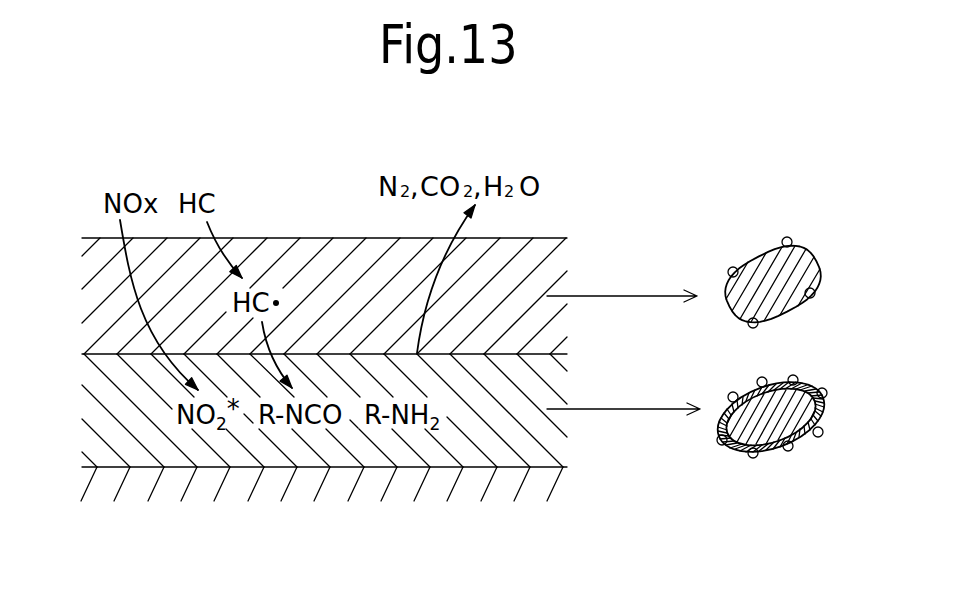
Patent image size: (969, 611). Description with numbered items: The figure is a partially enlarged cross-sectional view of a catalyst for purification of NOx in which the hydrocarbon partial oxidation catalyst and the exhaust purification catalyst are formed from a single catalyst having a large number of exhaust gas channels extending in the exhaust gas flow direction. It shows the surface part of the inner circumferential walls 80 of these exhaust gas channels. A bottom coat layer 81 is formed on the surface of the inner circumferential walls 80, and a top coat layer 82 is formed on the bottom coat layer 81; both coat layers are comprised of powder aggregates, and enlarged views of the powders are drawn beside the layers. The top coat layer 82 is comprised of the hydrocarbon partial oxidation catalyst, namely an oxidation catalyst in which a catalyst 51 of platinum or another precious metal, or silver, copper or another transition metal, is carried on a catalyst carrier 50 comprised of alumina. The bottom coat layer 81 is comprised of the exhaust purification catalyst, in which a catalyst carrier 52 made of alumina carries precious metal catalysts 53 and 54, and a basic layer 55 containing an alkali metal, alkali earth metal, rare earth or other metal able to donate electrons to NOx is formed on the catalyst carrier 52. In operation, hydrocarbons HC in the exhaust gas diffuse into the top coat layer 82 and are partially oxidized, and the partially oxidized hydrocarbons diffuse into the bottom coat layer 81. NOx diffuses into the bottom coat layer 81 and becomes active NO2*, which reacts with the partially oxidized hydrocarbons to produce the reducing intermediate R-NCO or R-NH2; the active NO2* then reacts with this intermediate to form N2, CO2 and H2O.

The inner circumferential walls 80 is at (273, 487).
The bottom coat layer 81 is at (103, 427).
The top coat layer 82 is at (110, 308).
The catalyst carrier 50 is at (818, 272).
The catalyst 51 is at (786, 240).
The catalyst carrier 52 is at (800, 412).
The precious metal catalyst 53 is at (732, 396).
The precious metal catalyst 54 is at (720, 443).
The basic layer 55 is at (807, 383).